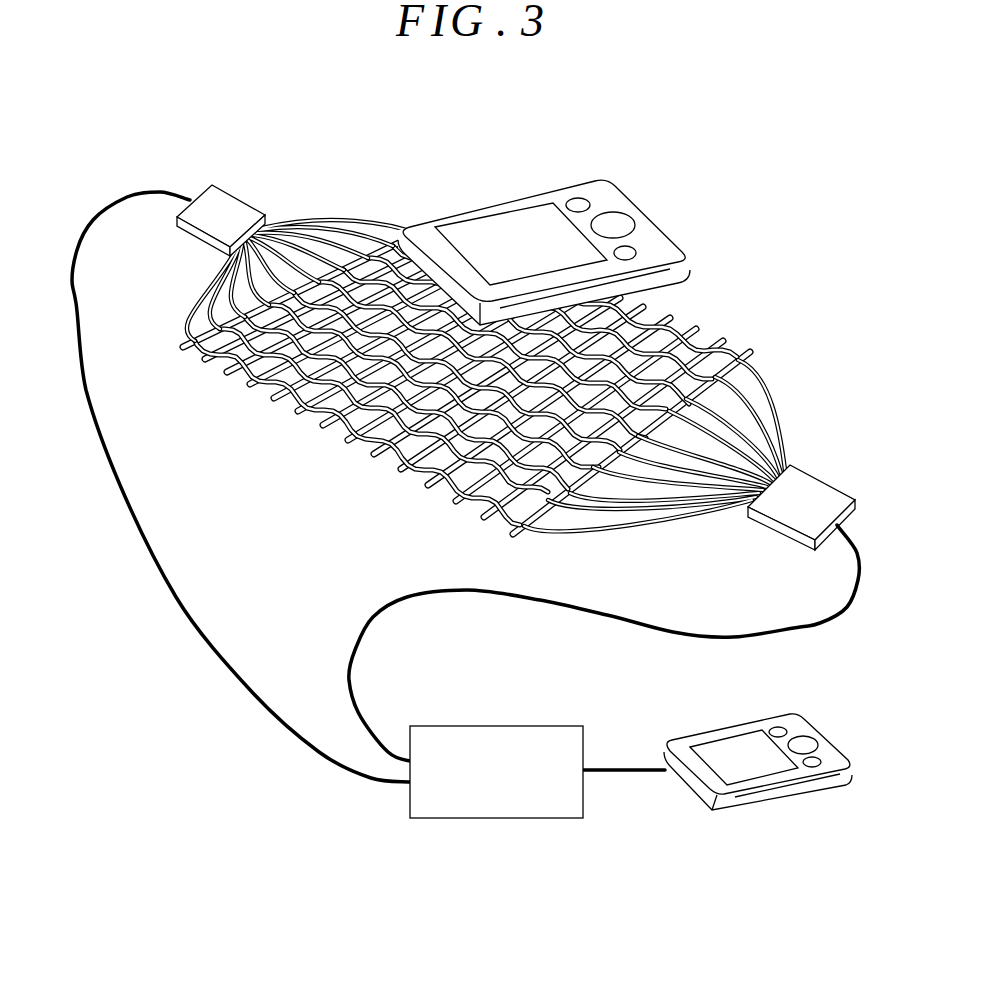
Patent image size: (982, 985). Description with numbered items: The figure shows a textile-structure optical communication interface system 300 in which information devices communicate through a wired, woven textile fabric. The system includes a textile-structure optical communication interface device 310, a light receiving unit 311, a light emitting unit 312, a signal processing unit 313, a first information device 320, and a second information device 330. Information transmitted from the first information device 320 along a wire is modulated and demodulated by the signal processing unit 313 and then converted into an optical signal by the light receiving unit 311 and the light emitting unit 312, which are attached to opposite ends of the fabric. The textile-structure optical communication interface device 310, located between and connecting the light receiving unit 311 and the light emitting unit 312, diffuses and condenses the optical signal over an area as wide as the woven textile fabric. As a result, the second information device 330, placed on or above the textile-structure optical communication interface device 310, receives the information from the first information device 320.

The textile-structure optical communication interface system 300 is at (398, 126).
The textile-structure optical communication interface device 310 is at (724, 309).
The light receiving unit 311 is at (815, 487).
The light emitting unit 312 is at (237, 208).
The signal processing unit 313 is at (512, 725).
The first information device 320 is at (815, 725).
The second information device 330 is at (627, 202).